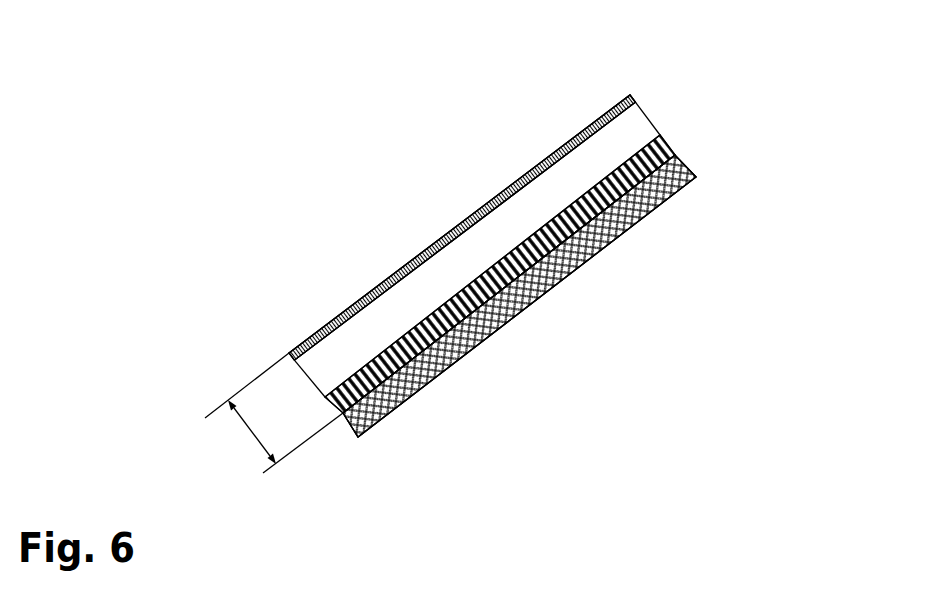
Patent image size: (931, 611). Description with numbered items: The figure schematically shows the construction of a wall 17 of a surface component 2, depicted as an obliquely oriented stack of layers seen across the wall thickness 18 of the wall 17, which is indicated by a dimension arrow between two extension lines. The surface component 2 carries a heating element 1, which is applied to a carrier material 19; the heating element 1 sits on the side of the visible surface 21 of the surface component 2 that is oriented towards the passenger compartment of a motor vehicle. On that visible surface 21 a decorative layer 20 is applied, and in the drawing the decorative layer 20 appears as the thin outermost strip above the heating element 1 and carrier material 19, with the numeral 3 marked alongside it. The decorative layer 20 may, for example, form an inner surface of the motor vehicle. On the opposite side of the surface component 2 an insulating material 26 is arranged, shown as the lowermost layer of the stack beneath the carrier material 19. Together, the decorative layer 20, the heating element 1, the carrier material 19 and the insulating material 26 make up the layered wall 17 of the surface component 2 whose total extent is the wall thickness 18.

The heating element 1 is at (633, 130).
The surface component 2 is at (465, 251).
The adhesive layer 3 is at (484, 198).
The decorative layer 20 is at (630, 95).
The carrier material 19 is at (673, 157).
The visible surface 21 is at (370, 282).
The insulating material 26 is at (565, 272).
The wall 17 is at (220, 427).
The wall thickness 18 is at (247, 435).